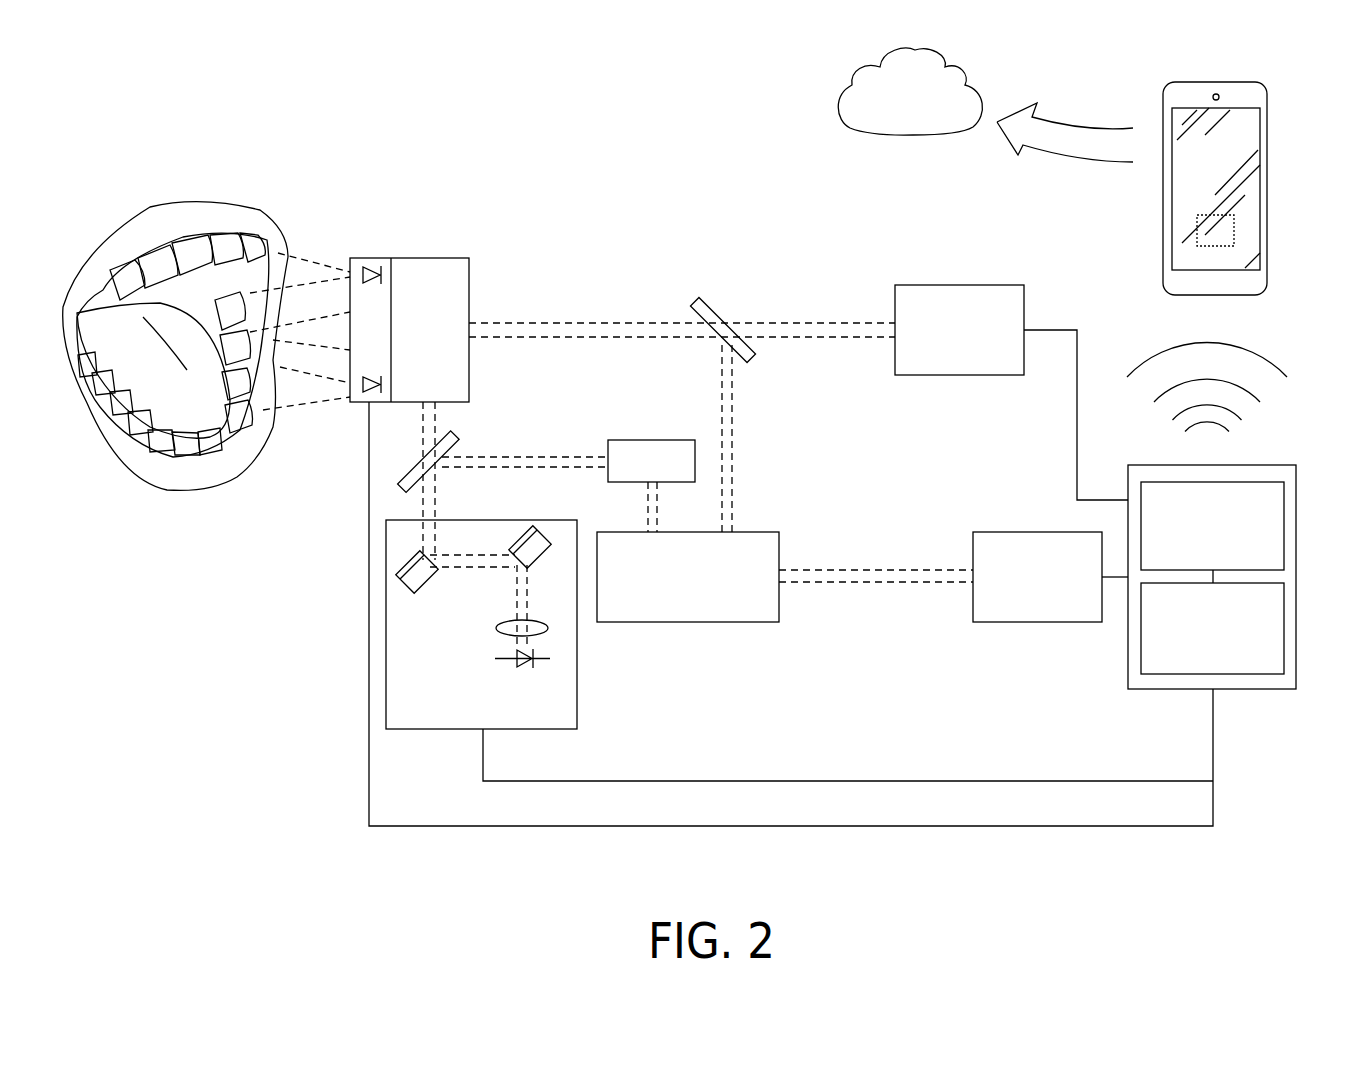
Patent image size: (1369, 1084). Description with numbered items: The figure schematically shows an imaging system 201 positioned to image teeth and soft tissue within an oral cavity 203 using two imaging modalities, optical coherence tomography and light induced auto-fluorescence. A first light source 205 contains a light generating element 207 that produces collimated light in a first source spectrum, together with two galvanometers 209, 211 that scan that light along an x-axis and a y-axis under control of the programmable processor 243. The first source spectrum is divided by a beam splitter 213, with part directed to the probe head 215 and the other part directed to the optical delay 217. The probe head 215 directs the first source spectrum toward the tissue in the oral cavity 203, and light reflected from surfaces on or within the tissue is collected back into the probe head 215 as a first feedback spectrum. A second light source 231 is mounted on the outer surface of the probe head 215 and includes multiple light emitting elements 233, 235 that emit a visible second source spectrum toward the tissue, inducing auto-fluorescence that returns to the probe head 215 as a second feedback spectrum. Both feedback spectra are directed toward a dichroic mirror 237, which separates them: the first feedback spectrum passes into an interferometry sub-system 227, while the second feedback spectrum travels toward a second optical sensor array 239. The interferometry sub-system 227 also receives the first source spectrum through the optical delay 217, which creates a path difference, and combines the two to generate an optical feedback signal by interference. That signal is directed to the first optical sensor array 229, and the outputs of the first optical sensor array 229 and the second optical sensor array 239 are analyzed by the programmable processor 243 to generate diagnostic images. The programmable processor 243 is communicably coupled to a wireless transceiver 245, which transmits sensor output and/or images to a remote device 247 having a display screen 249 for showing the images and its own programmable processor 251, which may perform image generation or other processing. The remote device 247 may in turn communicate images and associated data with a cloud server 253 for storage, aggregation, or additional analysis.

The imaging system 201 is at (360, 128).
The oral cavity 203 is at (165, 207).
The first light source 205 is at (425, 729).
The light generating element 207 is at (537, 662).
The galvanometer 209 is at (520, 540).
The galvanometer 211 is at (400, 583).
The beam splitter 213 is at (407, 470).
The probe head 215 is at (437, 258).
The optical delay 217 is at (635, 440).
The interferometry sub-system 227 is at (728, 622).
The first optical sensor array 229 is at (1012, 622).
The second light source 231 is at (340, 262).
The light emitting element 233 is at (372, 262).
The light emitting element 235 is at (370, 392).
The dichroic mirror 237 is at (702, 303).
The second optical sensor array 239 is at (921, 285).
The programmable processor 243 is at (1284, 548).
The wireless transceiver 245 is at (1258, 676).
The remote device 247 is at (1267, 102).
The display screen 249 is at (1218, 180).
The programmable processor 251 is at (1226, 232).
The cloud server 253 is at (837, 110).